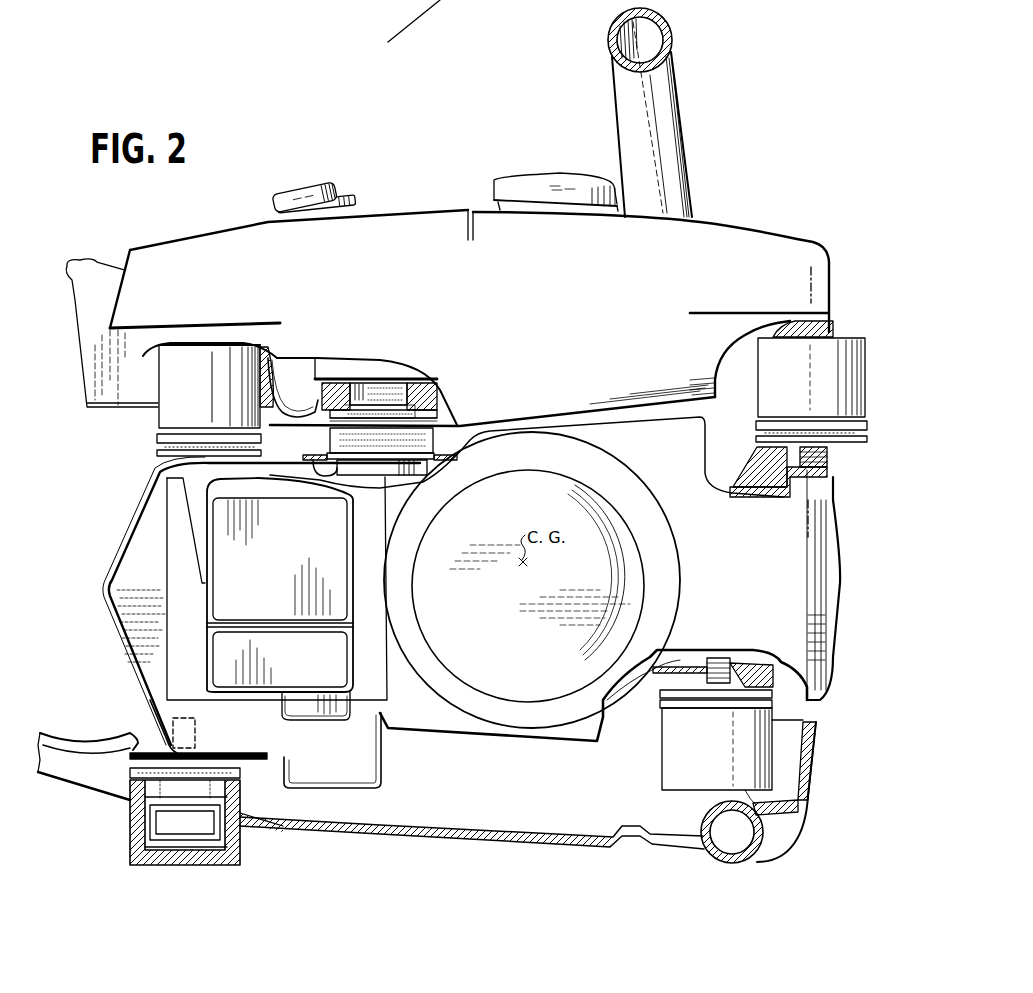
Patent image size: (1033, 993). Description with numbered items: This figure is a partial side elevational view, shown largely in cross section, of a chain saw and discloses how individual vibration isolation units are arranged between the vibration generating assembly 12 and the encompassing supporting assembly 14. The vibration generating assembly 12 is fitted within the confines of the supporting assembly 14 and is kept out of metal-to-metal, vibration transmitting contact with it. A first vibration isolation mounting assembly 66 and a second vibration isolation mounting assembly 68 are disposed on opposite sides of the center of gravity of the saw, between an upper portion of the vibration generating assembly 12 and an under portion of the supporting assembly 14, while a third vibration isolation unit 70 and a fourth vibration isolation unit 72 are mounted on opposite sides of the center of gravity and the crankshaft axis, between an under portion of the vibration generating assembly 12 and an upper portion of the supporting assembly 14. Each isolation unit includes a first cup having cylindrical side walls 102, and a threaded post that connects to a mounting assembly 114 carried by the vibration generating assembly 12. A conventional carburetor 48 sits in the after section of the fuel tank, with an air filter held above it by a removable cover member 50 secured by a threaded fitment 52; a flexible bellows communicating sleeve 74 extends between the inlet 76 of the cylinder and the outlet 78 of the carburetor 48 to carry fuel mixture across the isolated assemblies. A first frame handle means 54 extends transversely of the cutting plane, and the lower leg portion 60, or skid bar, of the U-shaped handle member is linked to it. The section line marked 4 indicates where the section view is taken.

The section line 4- 4 is at (808, 277).
The vibration generating assembly 12 is at (841, 568).
The supporting assembly 14 is at (758, 219).
The carburetor 48 is at (315, 376).
The removable cover member 50 is at (376, 214).
The threaded fitment 52 is at (337, 184).
The first frame handle means 54 is at (671, 48).
The lower leg portion 60 is at (63, 780).
The first vibration isolation mounting assembly 66 is at (868, 344).
The second vibration isolation mounting assembly 68 is at (156, 417).
The third vibration isolation unit 70 is at (658, 738).
The fourth vibration isolation unit 72 is at (130, 807).
The flexible bellows communicating sleeve 74 is at (433, 428).
The inlet of the cylinder 76 is at (320, 457).
The outlet of the carburetor 78 is at (398, 388).
The cylindrical side walls 102 is at (130, 855).
The mounting assembly 114 is at (738, 472).